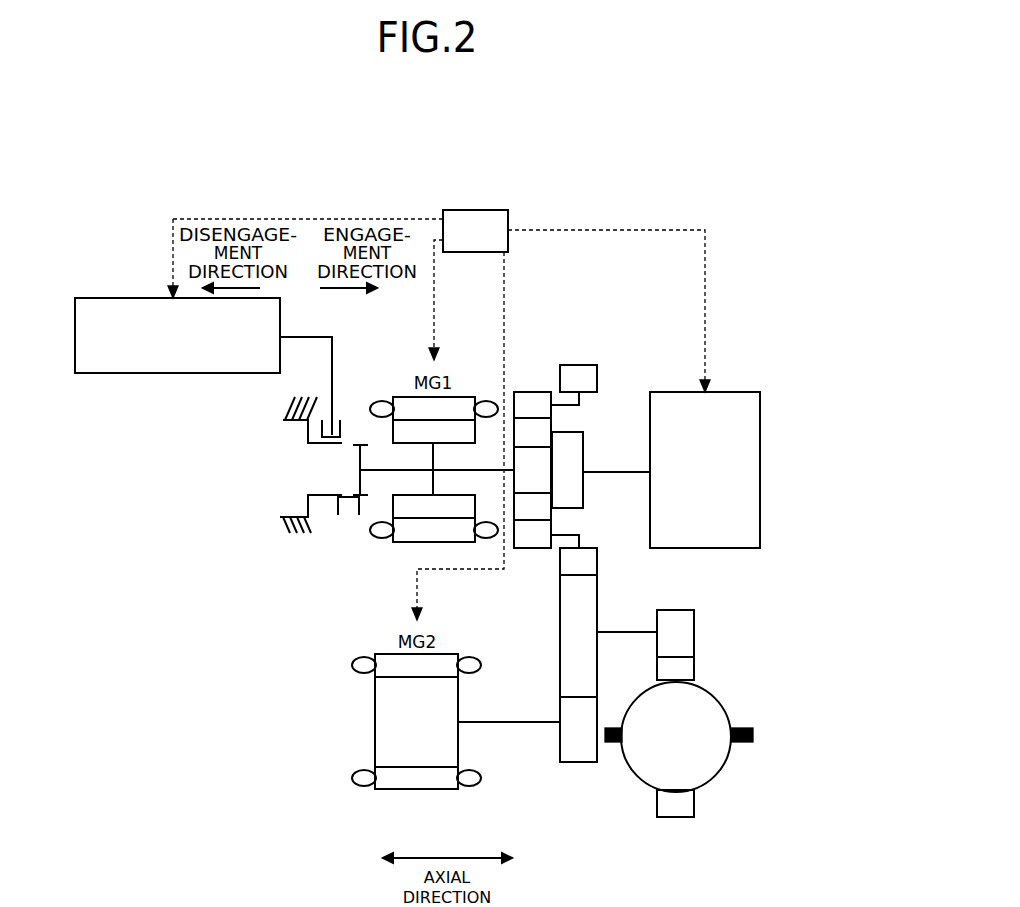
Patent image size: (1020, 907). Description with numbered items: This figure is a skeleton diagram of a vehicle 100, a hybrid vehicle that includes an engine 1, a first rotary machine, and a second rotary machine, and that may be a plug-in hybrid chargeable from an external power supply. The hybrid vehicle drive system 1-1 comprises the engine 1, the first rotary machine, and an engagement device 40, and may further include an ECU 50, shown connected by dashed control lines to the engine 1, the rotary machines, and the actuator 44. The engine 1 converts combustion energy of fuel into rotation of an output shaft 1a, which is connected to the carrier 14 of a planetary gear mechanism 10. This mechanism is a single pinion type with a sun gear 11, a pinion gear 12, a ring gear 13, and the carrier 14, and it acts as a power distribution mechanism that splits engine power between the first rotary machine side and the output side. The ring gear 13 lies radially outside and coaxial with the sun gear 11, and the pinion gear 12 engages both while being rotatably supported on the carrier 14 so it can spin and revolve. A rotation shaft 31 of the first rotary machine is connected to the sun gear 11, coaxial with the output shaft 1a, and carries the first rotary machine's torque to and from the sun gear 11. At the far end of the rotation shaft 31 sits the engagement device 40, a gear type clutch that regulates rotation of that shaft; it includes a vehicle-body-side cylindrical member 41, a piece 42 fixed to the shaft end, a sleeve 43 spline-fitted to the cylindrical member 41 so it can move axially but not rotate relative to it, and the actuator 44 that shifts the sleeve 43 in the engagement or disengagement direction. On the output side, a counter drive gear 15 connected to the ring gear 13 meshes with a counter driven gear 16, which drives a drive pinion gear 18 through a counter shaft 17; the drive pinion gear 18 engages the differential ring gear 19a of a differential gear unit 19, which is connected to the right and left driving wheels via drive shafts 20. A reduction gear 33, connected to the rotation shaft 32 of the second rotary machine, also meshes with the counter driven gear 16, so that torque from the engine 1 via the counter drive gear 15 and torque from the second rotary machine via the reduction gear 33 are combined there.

The engine 1 is at (760, 392).
The hybrid vehicle drive system 1-1 is at (430, 185).
The output shaft 1a is at (618, 468).
The planetary gear mechanism 10 is at (530, 382).
The sun gear 11 is at (553, 472).
The pinion gear 12 is at (553, 427).
The ring gear 13 is at (541, 392).
The carrier 14 is at (583, 487).
The counter drive gear 15 is at (597, 563).
The counter driven gear 16 is at (597, 602).
The counter shaft 17 is at (628, 638).
The drive pinion gear 18 is at (677, 610).
The differential gear unit 19 is at (735, 685).
The differential ring gear 19a is at (694, 670).
The drive shafts 20 is at (743, 727).
The rotation shaft 31 is at (458, 470).
The rotation shaft 32 is at (508, 720).
The reduction gear 33 is at (582, 762).
The engagement device 40 is at (338, 542).
The vehicle-body-side cylindrical member 41 is at (320, 494).
The piece 42 is at (358, 442).
The sleeve 43 is at (342, 432).
The actuator 44 is at (117, 298).
The ECU 50 is at (473, 210).
The vehicle 100 is at (295, 186).